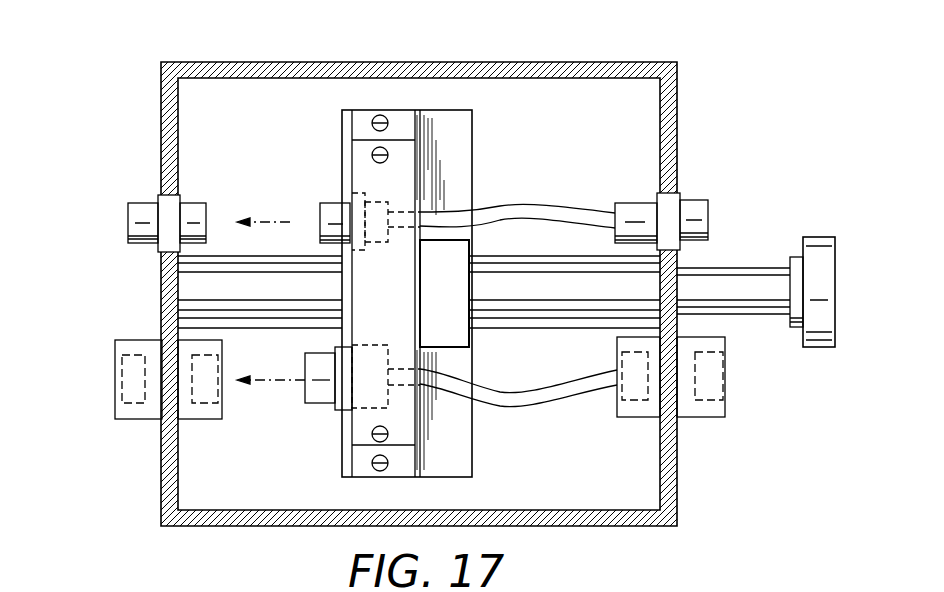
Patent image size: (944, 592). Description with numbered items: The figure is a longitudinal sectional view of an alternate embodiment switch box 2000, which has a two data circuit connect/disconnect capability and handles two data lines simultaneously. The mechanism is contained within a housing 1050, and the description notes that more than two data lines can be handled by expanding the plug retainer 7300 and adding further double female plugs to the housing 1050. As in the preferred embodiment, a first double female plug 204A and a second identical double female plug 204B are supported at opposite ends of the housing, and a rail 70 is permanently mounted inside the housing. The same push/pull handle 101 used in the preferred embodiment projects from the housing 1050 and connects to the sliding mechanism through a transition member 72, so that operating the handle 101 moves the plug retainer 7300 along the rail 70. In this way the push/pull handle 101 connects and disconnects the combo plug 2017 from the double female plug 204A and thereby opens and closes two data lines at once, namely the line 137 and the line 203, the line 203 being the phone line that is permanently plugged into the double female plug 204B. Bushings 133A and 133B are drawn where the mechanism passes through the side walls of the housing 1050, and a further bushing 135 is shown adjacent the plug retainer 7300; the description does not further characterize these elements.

The housing 1050 is at (590, 62).
The switch box 2000 is at (702, 87).
The rail 70 is at (208, 302).
The push/pull handle 101 is at (820, 237).
The bushing 133A is at (143, 210).
The bushing 133B is at (702, 200).
The plug retainer 7300 is at (397, 155).
The transition member 72 is at (440, 325).
The plunger bushing 135 is at (327, 200).
The combo plug 2017 is at (325, 405).
The line 137 is at (545, 212).
The phone line 203 is at (557, 400).
The double female plug 204A is at (130, 419).
The double female plug 204B is at (707, 417).